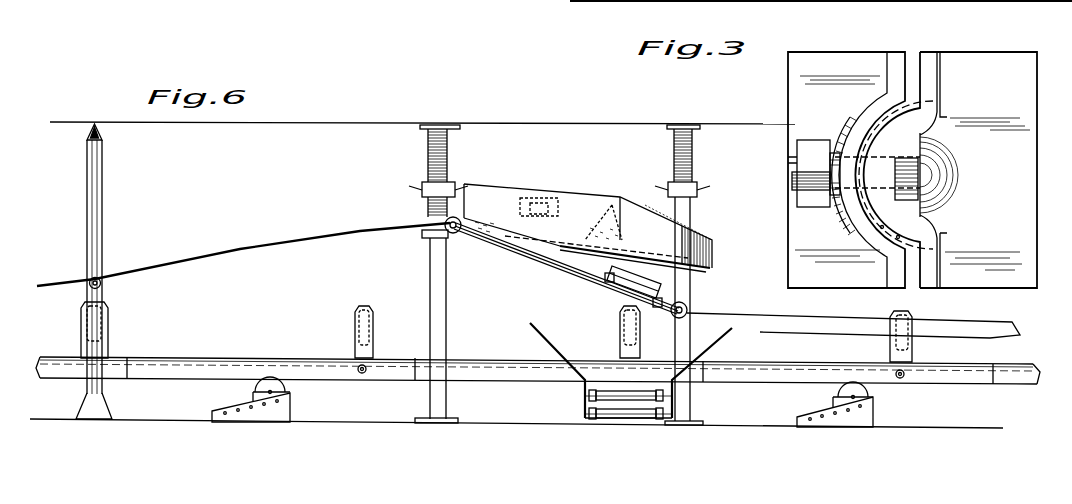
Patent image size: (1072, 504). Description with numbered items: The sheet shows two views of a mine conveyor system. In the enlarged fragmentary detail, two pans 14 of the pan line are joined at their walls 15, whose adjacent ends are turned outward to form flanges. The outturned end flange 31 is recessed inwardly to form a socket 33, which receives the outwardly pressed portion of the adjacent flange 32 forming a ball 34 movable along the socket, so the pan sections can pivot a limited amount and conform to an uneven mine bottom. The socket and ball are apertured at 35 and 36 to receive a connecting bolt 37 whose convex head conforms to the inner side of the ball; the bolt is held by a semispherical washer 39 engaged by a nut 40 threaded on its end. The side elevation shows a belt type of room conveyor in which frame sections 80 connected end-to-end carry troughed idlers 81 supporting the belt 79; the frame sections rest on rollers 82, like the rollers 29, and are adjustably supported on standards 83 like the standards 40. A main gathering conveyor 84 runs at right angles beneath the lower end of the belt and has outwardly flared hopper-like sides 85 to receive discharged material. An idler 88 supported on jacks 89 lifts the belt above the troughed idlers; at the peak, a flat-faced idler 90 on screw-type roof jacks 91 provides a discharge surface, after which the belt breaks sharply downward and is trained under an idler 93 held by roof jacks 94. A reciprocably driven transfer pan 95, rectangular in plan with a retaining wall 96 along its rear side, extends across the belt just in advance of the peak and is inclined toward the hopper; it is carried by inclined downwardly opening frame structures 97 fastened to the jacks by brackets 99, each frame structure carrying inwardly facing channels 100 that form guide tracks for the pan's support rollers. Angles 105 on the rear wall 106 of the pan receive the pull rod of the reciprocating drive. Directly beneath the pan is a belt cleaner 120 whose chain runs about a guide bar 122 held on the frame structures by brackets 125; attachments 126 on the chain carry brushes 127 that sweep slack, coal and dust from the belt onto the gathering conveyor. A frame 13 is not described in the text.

In FIG. 6, the frame 13 is at (466, 18).
In FIG. 3, the pan 14 is at (787, 243).
In FIG. 3, the pan wall 15 is at (1004, 65).
In FIG. 6, the roller 29 is at (422, 20).
In FIG. 3, the outturned end flange 31 is at (895, 65).
In FIG. 3, the outturned end flange 32 is at (930, 60).
In FIG. 3, the socket 33 is at (882, 228).
In FIG. 3, the ball 34 is at (900, 237).
In FIG. 3, the aperture 35 is at (856, 112).
In FIG. 3, the aperture 36 is at (935, 115).
In FIG. 3, the connecting bolt 37 is at (797, 161).
In FIG. 3, the semispherical washer 39 is at (842, 218).
In FIG. 6, the nut 40 is at (72, 0).
In FIG. 3, the nut 40 is at (825, 133).
In FIG. 6, the belt 79 is at (207, 254).
In FIG. 6, the frame section 80 is at (55, 358).
In FIG. 6, the troughed idler 81 is at (102, 316).
In FIG. 6, the roller 82 is at (288, 388).
In FIG. 6, the standard 83 is at (292, 410).
In FIG. 6, the main gathering conveyor 84 is at (588, 397).
In FIG. 6, the hopper-like side 85 is at (565, 360).
In FIG. 6, the idler 88 is at (102, 284).
In FIG. 6, the jack 89 is at (100, 224).
In FIG. 6, the idler 90 is at (449, 232).
In FIG. 6, the roof jack 91 is at (447, 302).
In FIG. 6, the idler 93 is at (693, 309).
In FIG. 6, the roof jack 94 is at (690, 290).
In FIG. 6, the transfer pan 95 is at (561, 240).
In FIG. 6, the retaining wall 96 is at (642, 210).
In FIG. 6, the frame structure 97 is at (492, 245).
In FIG. 6, the bracket 99 is at (422, 233).
In FIG. 6, the channel 100 is at (612, 205).
In FIG. 6, the angle 105 is at (541, 198).
In FIG. 6, the rear wall 106 is at (485, 185).
In FIG. 6, the belt cleaner 120 is at (598, 262).
In FIG. 6, the guide bar 122 is at (640, 298).
In FIG. 6, the bracket 125 is at (706, 260).
In FIG. 6, the attachment 126 is at (611, 271).
In FIG. 6, the brush 127 is at (624, 283).